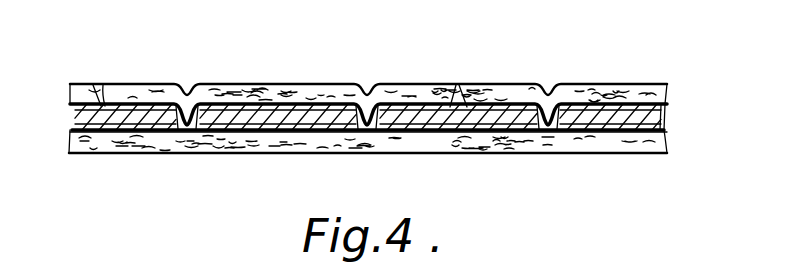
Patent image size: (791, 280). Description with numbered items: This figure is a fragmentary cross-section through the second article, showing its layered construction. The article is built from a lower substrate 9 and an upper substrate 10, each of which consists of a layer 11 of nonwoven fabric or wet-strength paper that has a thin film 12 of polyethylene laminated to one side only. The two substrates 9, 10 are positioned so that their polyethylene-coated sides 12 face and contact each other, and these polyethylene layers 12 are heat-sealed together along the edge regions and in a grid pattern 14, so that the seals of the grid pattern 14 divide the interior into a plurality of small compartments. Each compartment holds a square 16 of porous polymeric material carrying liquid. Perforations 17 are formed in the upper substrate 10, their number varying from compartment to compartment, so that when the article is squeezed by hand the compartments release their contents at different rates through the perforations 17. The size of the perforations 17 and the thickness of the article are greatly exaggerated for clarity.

The lower substrate 9 is at (68, 144).
The upper substrate 10 is at (68, 92).
The layer of nonwoven fabric or wet-strength paper 11 is at (655, 147).
The thin film of polyethylene 12 is at (125, 108).
The grid pattern 14 is at (186, 126).
The square of porous polymeric material 16 is at (288, 115).
The perforations 17 is at (459, 100).